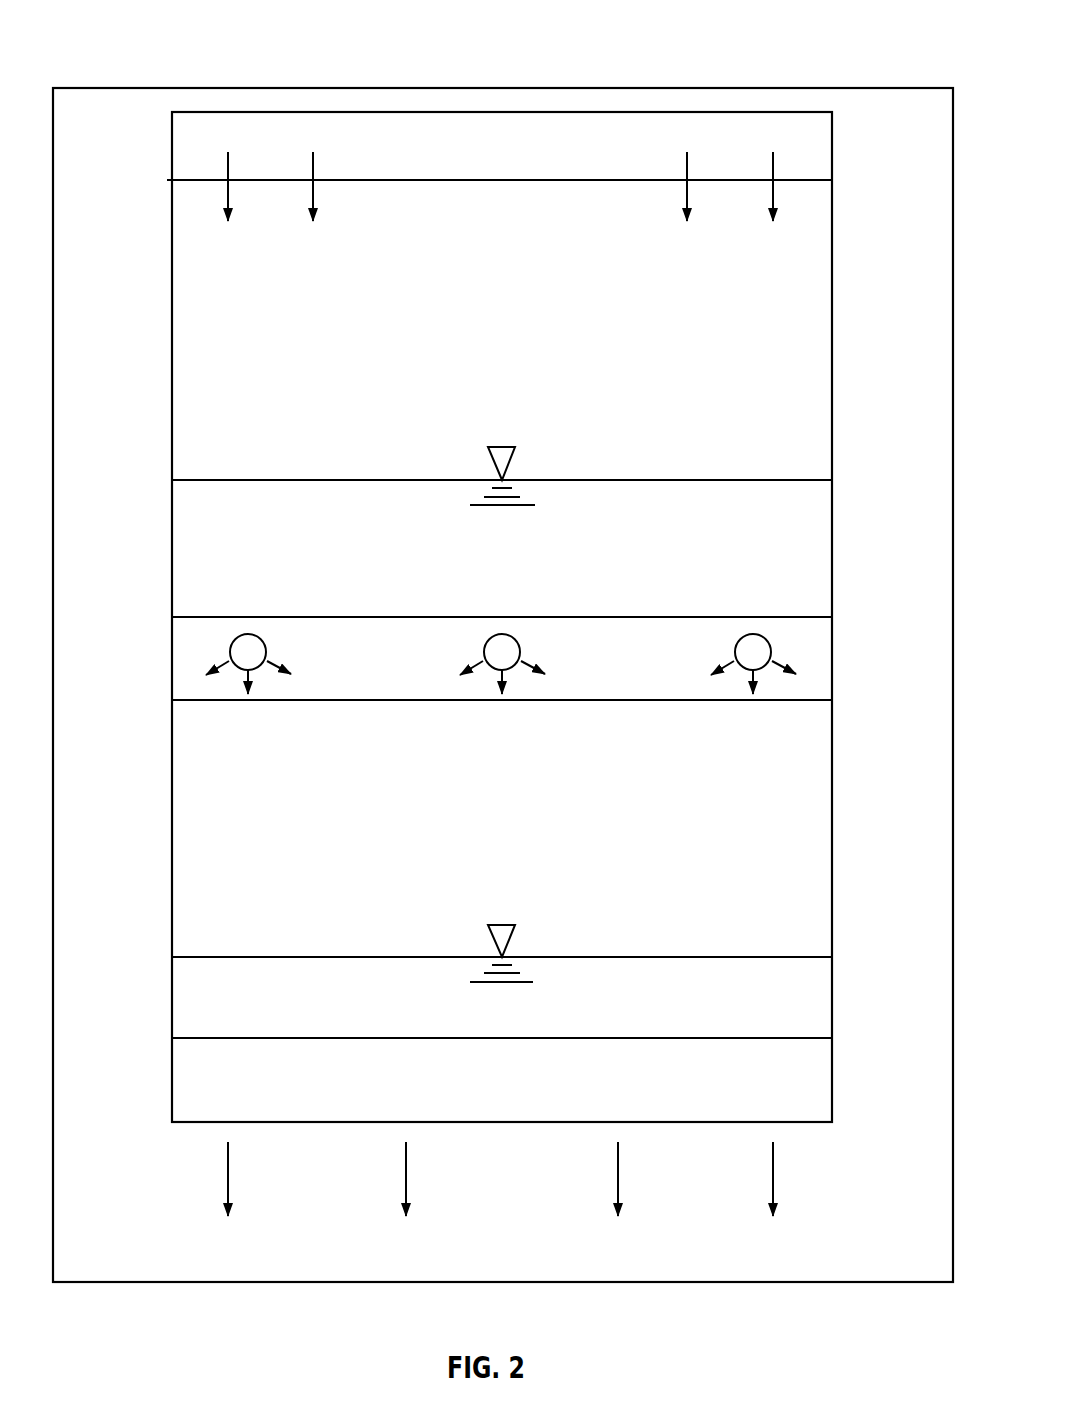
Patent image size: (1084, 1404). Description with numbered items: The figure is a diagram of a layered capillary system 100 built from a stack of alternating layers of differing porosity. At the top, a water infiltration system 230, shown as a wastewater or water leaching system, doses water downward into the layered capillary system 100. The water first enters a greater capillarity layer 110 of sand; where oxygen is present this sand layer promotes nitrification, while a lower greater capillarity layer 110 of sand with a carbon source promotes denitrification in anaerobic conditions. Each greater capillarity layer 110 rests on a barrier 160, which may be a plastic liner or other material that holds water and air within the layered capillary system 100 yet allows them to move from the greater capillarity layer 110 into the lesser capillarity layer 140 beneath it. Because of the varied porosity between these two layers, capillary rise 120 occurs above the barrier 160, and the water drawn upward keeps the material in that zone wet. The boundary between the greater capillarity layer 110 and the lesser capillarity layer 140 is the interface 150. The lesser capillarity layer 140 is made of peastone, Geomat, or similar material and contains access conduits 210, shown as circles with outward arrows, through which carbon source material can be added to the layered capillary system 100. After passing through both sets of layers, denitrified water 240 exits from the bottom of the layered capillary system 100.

The layered capillary system 100 is at (865, 52).
The water infiltration system 230 is at (848, 168).
The greater capillarity layer 110 is at (795, 283).
The barrier 160 is at (172, 490).
The capillary rise 120 is at (536, 462).
The interface 150 is at (780, 617).
The lesser capillarity layer 140 is at (820, 663).
The access conduits 210 is at (224, 651).
The denitrified water 240 is at (848, 1170).